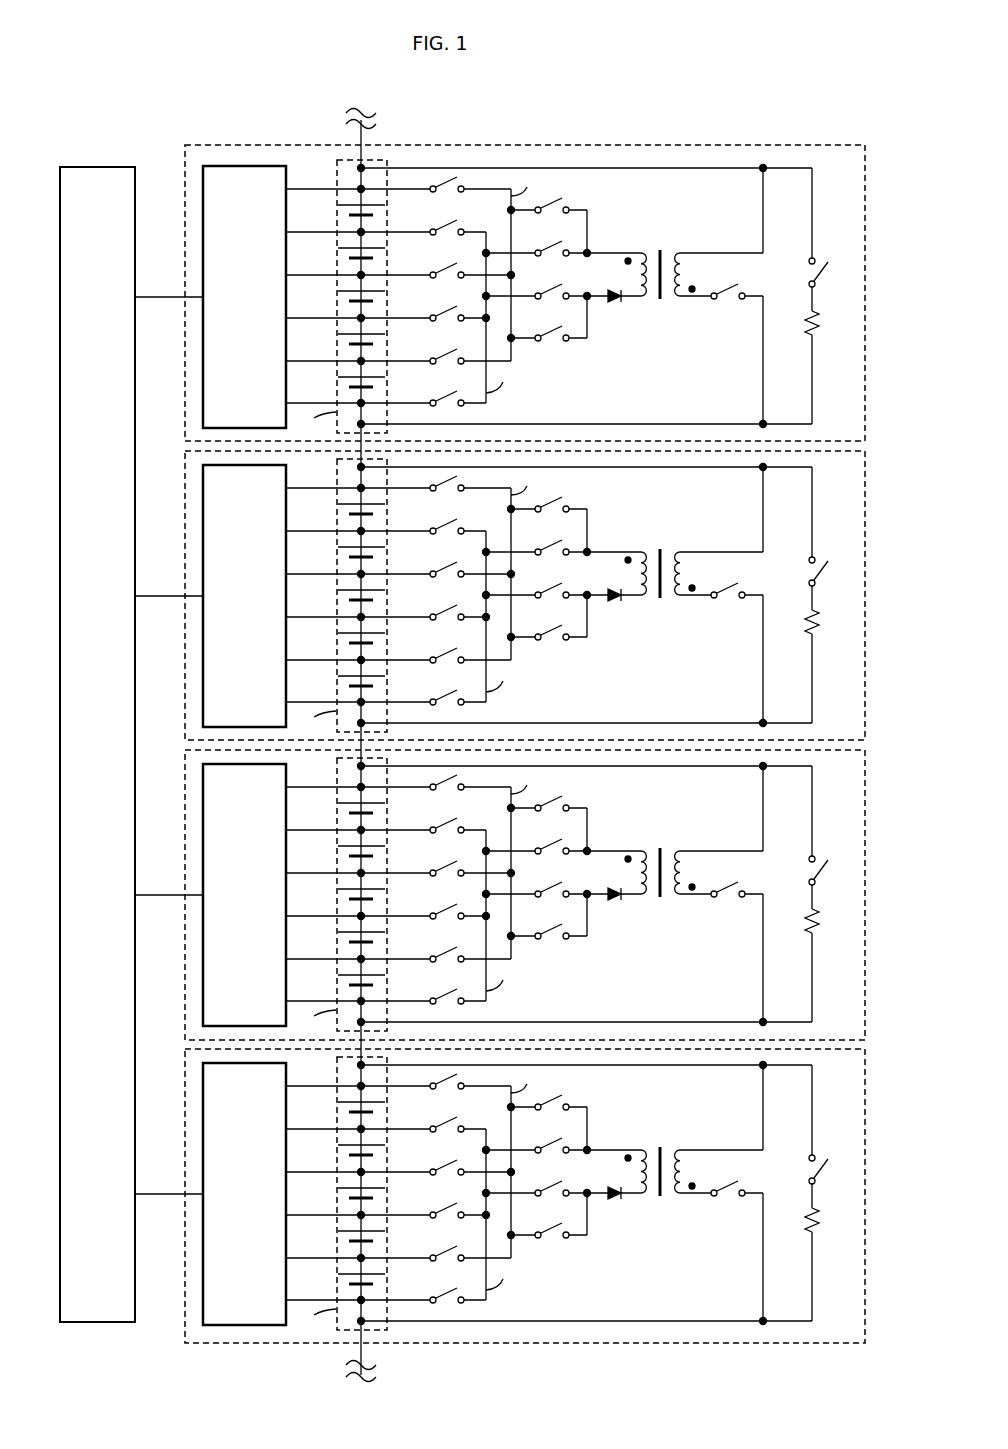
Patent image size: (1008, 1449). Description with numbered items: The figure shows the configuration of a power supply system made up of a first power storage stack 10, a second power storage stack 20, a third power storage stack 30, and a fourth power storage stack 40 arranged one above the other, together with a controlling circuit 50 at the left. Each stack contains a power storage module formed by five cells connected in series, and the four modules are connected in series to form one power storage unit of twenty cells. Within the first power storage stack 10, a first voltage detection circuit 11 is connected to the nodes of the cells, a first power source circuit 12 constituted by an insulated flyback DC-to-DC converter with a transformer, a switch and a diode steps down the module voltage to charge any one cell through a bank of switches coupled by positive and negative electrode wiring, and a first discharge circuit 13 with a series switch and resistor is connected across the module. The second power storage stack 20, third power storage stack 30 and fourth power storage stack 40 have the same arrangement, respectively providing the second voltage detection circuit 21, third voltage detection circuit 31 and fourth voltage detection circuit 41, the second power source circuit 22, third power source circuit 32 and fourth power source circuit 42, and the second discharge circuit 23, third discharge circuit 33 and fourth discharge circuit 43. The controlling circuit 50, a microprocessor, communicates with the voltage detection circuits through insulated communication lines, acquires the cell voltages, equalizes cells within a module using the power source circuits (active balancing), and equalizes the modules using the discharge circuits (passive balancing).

The first power storage stack 10 is at (541, 293).
The first voltage detection circuit 11 is at (286, 179).
The first power source circuit 12 is at (666, 238).
The first discharge circuit 13 is at (827, 247).
The second power storage stack 20 is at (541, 593).
The second voltage detection circuit 21 is at (282, 588).
The second power source circuit 22 is at (660, 555).
The second discharge circuit 23 is at (819, 569).
The third power storage stack 30 is at (541, 892).
The third voltage detection circuit 31 is at (282, 887).
The third power source circuit 32 is at (660, 854).
The third discharge circuit 33 is at (819, 868).
The fourth power storage stack 40 is at (541, 1193).
The fourth voltage detection circuit 41 is at (282, 1186).
The fourth power source circuit 42 is at (660, 1153).
The fourth discharge circuit 43 is at (819, 1167).
The controlling circuit 50 is at (60, 201).